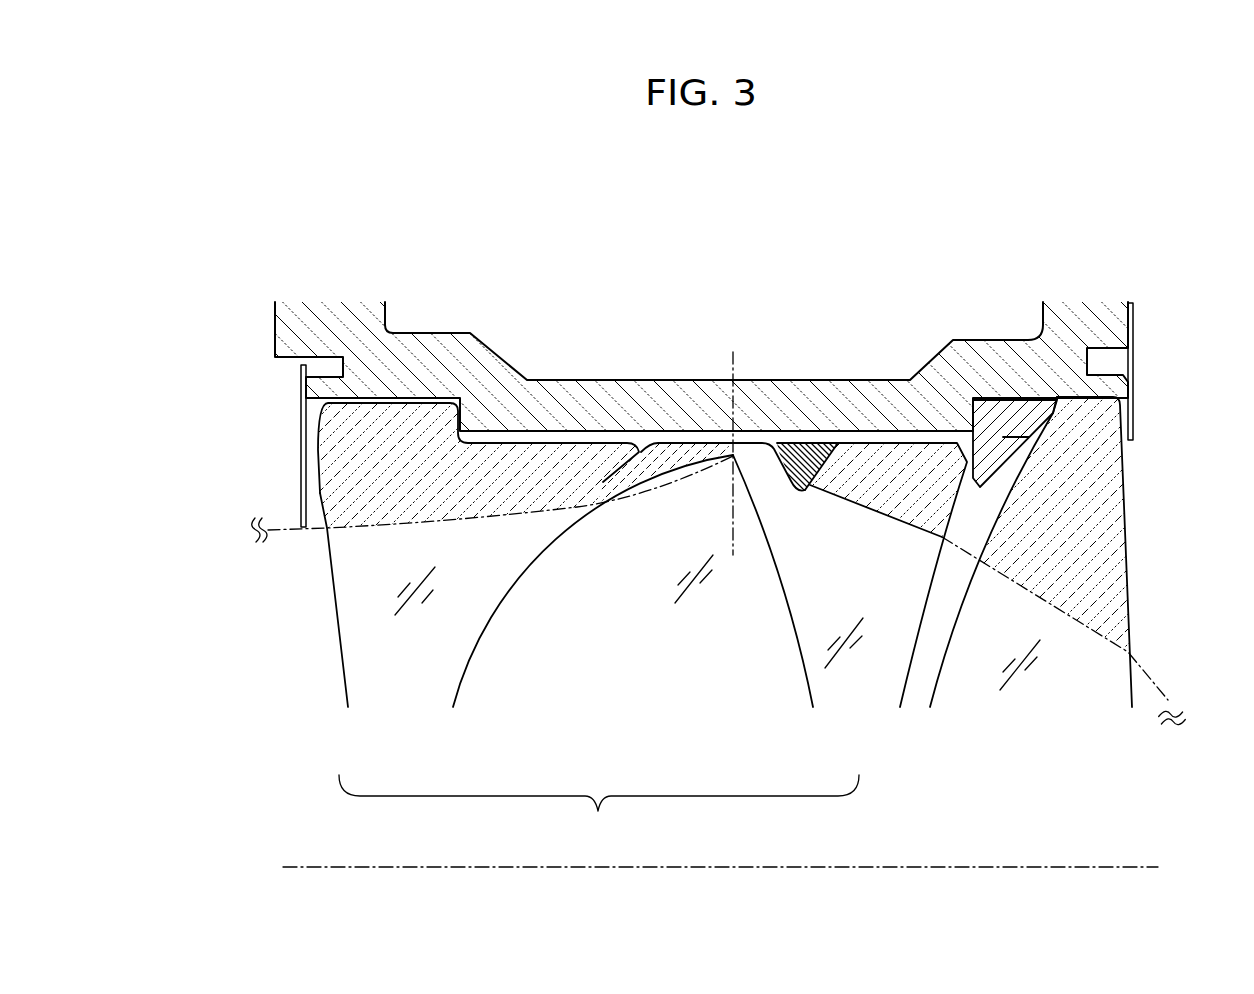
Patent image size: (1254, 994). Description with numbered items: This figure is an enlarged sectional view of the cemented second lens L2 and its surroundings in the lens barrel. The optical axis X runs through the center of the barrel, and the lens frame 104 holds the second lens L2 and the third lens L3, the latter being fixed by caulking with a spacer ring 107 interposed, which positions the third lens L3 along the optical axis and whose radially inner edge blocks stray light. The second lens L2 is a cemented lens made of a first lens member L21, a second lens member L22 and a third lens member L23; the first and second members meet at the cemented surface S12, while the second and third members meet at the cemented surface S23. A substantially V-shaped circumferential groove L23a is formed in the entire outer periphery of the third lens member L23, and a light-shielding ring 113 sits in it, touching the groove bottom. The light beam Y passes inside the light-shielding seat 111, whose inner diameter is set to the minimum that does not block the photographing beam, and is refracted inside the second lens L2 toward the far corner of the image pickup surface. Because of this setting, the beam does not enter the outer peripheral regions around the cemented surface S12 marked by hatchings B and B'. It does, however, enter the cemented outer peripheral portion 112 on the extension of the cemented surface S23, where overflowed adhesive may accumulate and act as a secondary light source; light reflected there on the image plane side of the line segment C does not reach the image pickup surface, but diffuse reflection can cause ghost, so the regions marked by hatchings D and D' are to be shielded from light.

The lens frame 104 is at (533, 377).
The spacer ring 107 is at (1003, 403).
The light-shielding seat 111 is at (300, 448).
The cemented outer peripheral portion 112 is at (733, 447).
The light-shielding ring 113 is at (803, 447).
The circumferential groove L23a is at (830, 450).
The first lens member L21 is at (472, 590).
The second lens member L22 is at (673, 611).
The third lens member L23 is at (883, 611).
The second lens L2 is at (599, 811).
The third lens L3 is at (984, 552).
The cemented surface S12 is at (514, 591).
The cemented surface S23 is at (783, 577).
The line segment C is at (733, 457).
The optical axis X is at (719, 868).
The light beam Y is at (715, 601).
The hatching region B is at (472, 466).
The hatching region B' is at (666, 472).
The hatching region D is at (883, 490).
The hatching region D' is at (984, 524).